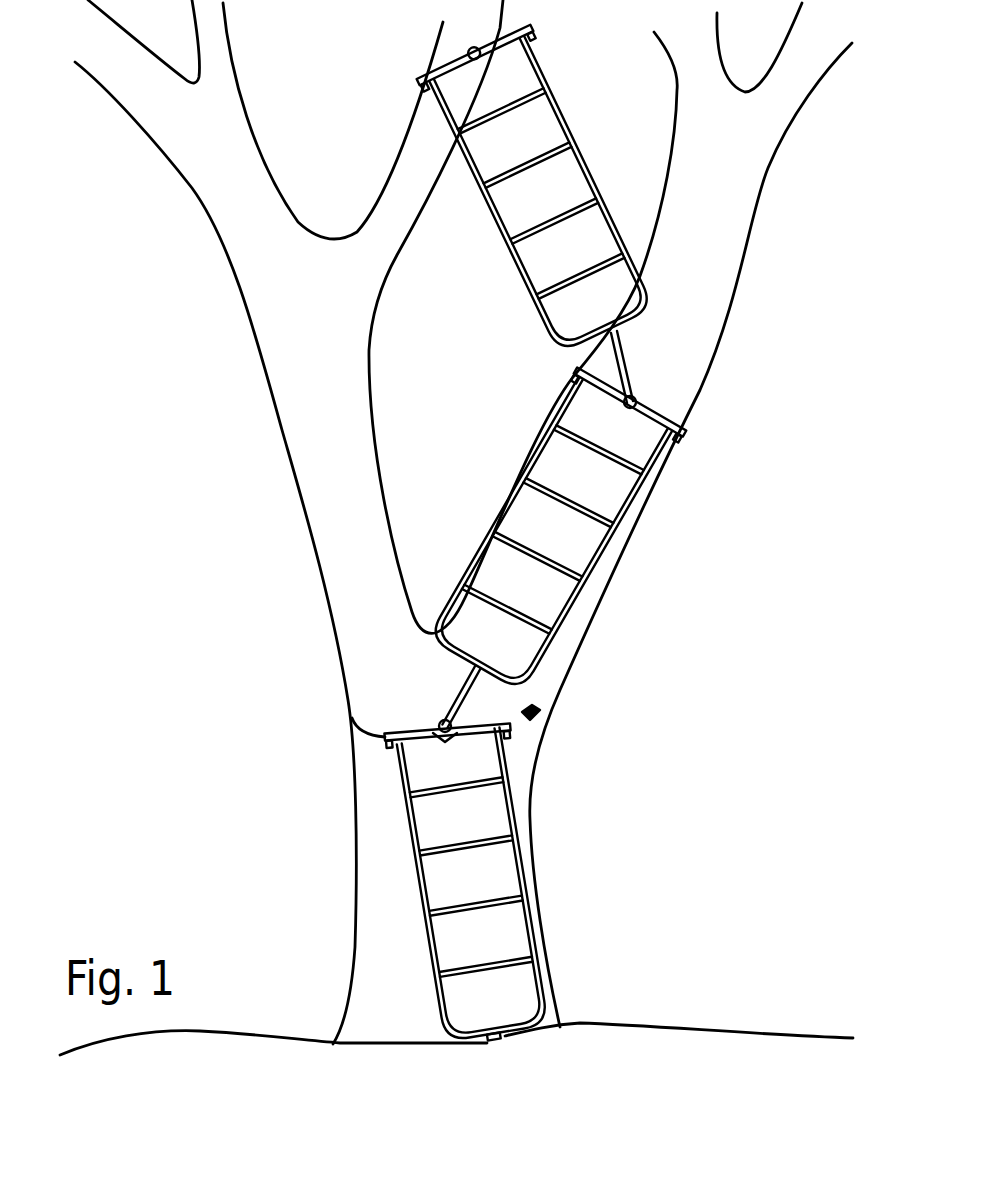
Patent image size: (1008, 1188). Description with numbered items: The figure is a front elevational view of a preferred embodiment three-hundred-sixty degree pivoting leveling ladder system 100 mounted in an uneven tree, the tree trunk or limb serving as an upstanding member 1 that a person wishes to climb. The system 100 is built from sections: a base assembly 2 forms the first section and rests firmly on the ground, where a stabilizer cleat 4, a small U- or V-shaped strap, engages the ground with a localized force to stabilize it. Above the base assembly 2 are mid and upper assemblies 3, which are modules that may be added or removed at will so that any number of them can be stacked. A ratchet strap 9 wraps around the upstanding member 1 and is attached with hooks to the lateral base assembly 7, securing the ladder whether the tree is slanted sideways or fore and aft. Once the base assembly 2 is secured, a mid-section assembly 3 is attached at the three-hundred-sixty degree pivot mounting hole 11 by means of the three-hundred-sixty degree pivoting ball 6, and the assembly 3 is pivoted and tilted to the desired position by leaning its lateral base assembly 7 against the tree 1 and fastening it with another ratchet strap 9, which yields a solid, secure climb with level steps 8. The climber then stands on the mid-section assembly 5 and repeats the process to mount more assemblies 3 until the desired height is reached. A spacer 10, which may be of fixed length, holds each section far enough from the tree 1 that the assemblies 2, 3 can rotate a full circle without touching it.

The upstanding member 1 is at (373, 957).
The base assembly 2 is at (517, 823).
The mid and upper assemblies 3 is at (592, 181).
The stabilizer cleat 4 is at (505, 1036).
The mid-section assembly 5 is at (492, 719).
The 360 degree pivoting ball 6 is at (437, 725).
The lateral base assembly 7 is at (420, 80).
The steps 8 is at (427, 797).
The ratchet strap 9 is at (540, 714).
The spacer 10 is at (622, 406).
The 360 degree pivot mounting hole 11 is at (430, 736).
The 360 degree pivoting leveling ladder system 100 is at (512, 367).